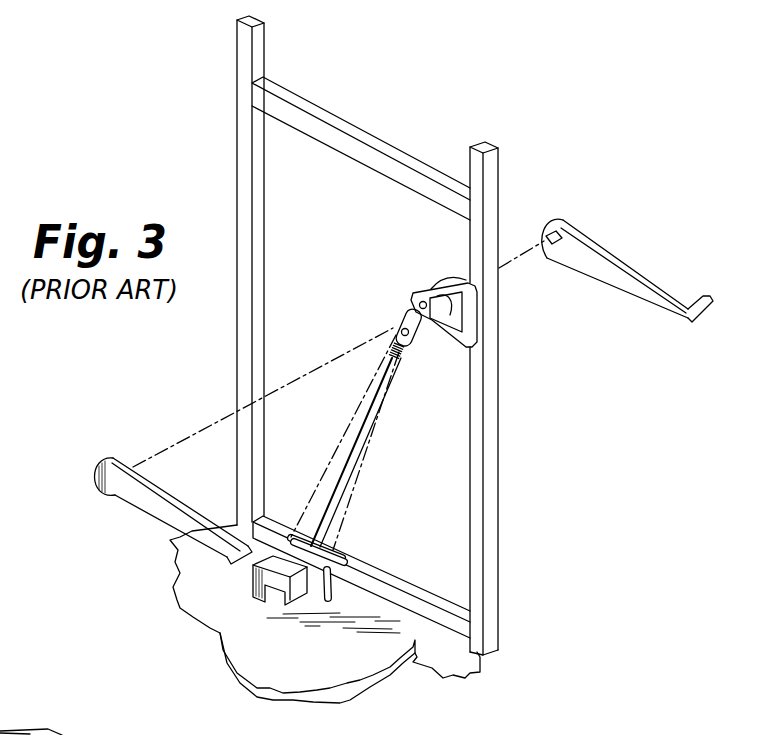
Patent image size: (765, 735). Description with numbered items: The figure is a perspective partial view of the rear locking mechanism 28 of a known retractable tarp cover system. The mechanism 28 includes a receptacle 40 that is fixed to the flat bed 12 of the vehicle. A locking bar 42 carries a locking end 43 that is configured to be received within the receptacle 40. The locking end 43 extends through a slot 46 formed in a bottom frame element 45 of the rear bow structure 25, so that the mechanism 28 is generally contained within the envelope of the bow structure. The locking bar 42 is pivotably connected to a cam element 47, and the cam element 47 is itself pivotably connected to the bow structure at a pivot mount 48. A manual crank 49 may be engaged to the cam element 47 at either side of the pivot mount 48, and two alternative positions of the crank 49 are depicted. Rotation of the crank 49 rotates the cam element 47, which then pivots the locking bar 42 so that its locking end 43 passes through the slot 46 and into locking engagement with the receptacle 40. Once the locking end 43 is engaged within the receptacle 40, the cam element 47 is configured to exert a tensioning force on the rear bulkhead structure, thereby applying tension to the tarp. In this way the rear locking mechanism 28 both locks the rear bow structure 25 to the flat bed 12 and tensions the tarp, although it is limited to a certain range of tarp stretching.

The flat bed 12 is at (378, 653).
The rear bow structure 25 is at (259, 265).
The rear locking mechanism 28 is at (410, 490).
The receptacle 40 is at (253, 584).
The locking bar 42 is at (352, 448).
The locking end 43 is at (333, 601).
The bottom frame element 45 is at (423, 605).
The slot 46 is at (345, 559).
The cam element 47 is at (427, 333).
The pivot mount 48 is at (413, 293).
The manual crank 49 is at (127, 493).